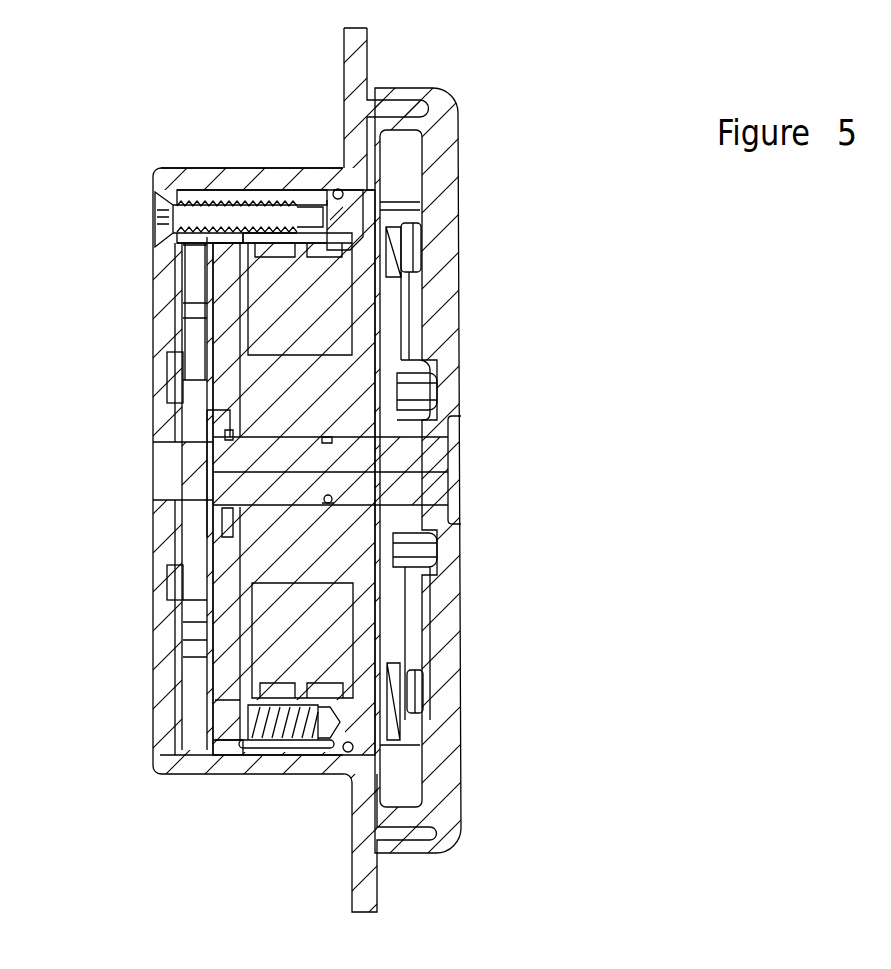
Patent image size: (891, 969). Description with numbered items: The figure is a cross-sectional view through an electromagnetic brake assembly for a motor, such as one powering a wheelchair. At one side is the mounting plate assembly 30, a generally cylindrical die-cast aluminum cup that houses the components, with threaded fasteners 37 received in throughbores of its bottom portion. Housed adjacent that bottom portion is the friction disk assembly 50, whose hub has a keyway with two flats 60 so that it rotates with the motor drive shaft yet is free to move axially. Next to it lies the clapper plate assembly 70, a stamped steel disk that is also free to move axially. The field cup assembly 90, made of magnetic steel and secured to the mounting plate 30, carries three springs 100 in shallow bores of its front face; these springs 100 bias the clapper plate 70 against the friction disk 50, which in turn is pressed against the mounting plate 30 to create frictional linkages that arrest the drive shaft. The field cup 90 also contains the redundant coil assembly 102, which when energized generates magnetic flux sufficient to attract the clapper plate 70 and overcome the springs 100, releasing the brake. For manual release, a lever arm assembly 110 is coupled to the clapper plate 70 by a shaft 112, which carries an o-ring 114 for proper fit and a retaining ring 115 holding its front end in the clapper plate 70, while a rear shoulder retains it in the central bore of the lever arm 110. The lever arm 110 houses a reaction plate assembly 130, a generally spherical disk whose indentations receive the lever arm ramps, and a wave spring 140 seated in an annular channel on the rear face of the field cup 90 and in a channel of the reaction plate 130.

The mounting plate assembly 30 is at (182, 161).
The threaded fasteners 37 is at (166, 206).
The friction disk assembly 50 is at (186, 333).
The flats 60 is at (160, 415).
The clapper plate assembly 70 is at (226, 713).
The field cup assembly 90 is at (343, 218).
The springs 100 is at (270, 735).
The redundant coil assembly 102 is at (304, 304).
The lever arm assembly 110 is at (465, 302).
The shaft 112 is at (443, 452).
The o-ring 114 is at (335, 498).
The retaining ring 115 is at (228, 517).
The reaction plate assembly 130 is at (426, 345).
The wave spring 140 is at (400, 257).